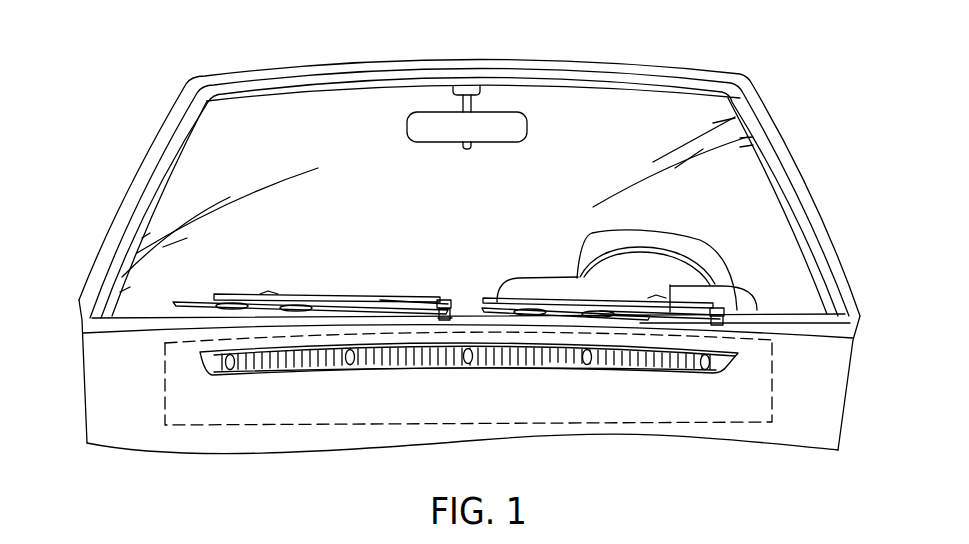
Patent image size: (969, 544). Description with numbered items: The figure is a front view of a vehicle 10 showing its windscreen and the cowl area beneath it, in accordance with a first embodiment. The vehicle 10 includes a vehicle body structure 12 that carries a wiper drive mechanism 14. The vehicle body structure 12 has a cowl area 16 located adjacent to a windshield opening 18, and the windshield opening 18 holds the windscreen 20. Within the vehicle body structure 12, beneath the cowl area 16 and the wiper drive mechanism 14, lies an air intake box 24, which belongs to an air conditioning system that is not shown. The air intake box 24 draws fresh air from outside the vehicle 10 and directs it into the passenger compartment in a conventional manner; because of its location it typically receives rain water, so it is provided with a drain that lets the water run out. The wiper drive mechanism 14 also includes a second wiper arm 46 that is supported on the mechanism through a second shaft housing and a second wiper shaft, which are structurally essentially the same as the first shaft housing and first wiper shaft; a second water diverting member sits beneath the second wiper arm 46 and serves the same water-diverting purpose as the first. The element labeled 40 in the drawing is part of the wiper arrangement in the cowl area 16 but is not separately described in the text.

The vehicle 10 is at (230, 33).
The vehicle body structure 12 is at (569, 52).
The wiper drive mechanism 14 is at (445, 290).
The cowl area 16 is at (779, 316).
The windshield opening 18 is at (183, 149).
The windscreen 20 is at (343, 117).
The air intake box 24 is at (221, 426).
The wiper arm 40 is at (688, 307).
The second wiper arm 46 is at (348, 300).